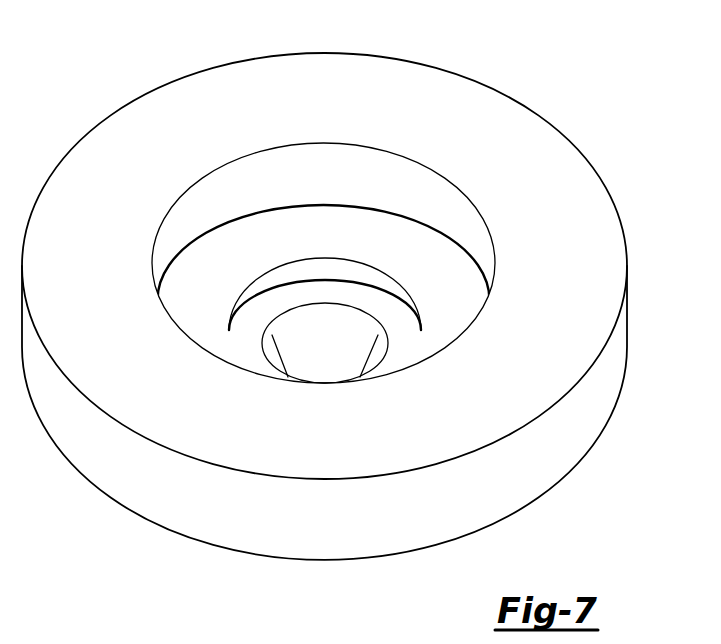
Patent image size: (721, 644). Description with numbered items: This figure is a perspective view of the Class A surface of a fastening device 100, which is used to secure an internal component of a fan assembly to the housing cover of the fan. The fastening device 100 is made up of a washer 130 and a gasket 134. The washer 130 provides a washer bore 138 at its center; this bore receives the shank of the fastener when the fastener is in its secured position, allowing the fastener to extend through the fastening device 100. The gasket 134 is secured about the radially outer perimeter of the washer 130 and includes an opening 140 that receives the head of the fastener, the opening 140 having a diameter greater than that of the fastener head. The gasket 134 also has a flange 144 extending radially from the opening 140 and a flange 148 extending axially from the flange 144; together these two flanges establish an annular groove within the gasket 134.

The fastening device 100 is at (360, 285).
The gasket 134 is at (360, 306).
The flange 144 is at (540, 242).
The flange 148 is at (568, 433).
The opening 140 is at (162, 252).
The washer 130 is at (338, 302).
The washer bore 138 is at (304, 326).